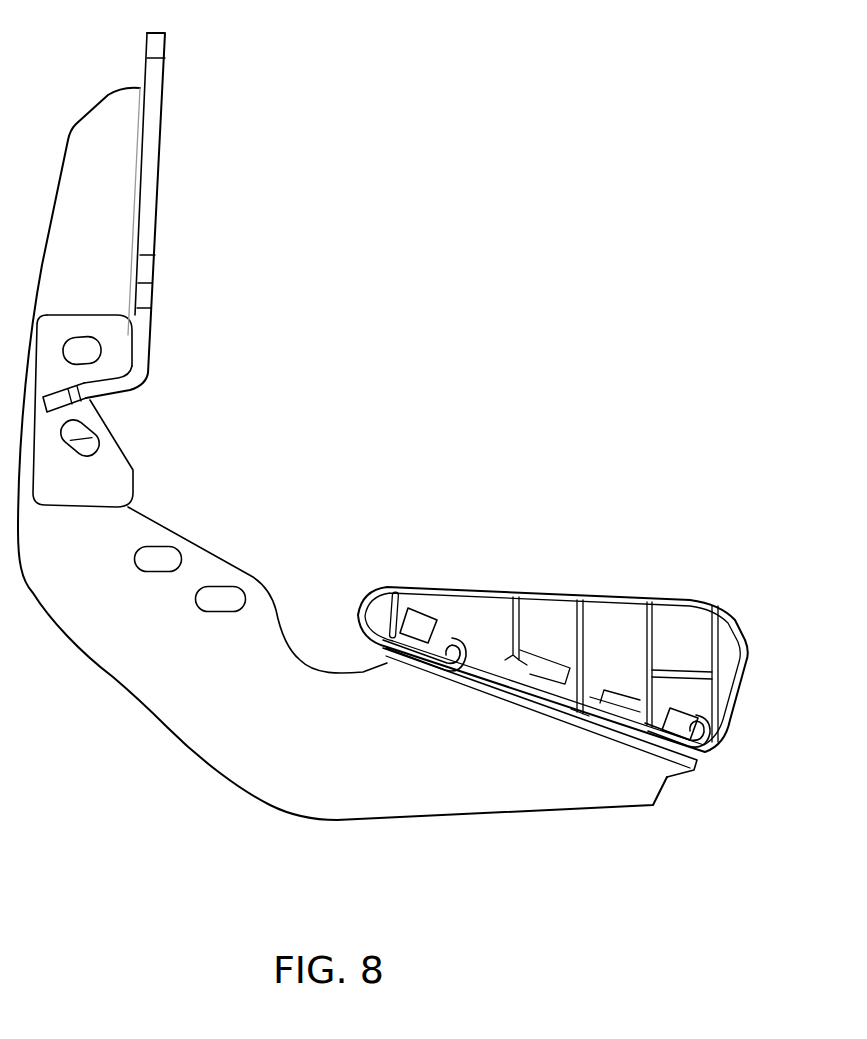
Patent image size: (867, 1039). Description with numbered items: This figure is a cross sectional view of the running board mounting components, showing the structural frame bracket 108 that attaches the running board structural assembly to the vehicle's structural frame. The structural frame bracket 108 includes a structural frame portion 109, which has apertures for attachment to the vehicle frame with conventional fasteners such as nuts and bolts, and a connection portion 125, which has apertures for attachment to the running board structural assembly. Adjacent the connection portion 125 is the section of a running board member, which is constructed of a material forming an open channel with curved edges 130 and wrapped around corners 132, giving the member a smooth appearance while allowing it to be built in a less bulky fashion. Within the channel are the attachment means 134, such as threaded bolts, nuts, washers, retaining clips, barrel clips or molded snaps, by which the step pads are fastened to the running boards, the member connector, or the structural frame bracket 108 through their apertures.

The structural frame bracket 108 is at (113, 645).
The structural frame portion 109 is at (98, 138).
The connection portion 125 is at (583, 735).
The curved edges 130 is at (425, 585).
The wrapped around corners 132 is at (453, 633).
The attachment means 134 is at (408, 616).